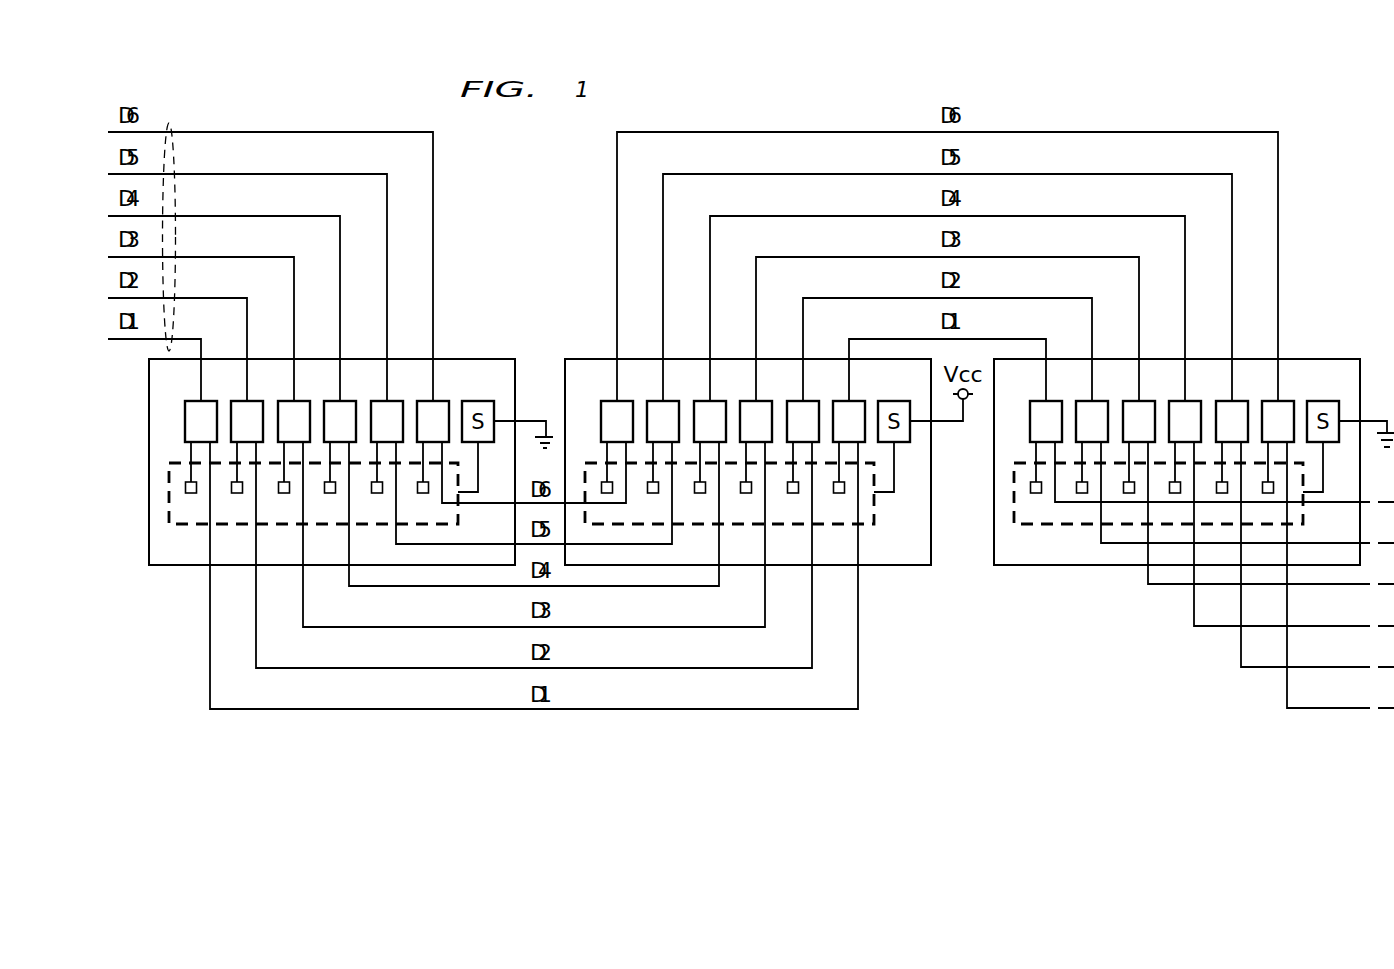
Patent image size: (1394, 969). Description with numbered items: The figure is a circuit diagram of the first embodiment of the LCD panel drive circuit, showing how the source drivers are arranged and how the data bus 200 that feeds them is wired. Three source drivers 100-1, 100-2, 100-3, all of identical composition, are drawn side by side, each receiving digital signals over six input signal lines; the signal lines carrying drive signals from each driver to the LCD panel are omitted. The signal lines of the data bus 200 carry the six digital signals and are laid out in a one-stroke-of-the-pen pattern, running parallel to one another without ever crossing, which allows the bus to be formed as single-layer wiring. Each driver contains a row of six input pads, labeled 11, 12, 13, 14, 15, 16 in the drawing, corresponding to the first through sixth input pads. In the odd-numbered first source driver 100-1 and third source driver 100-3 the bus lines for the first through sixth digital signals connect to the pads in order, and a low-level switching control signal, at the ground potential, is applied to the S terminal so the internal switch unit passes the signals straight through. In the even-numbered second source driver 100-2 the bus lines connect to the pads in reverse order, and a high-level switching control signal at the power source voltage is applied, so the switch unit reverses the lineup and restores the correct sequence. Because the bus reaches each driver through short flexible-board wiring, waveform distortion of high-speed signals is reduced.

The data bus 200 is at (170, 123).
The first source driver 100-1 is at (187, 565).
The second source driver 100-2 is at (898, 565).
The third source driver 100-3 is at (1313, 357).
The drive circuit 11 is at (623, 447).
The drive circuit 12 is at (669, 447).
The drive circuit 13 is at (716, 447).
The drive circuit 14 is at (762, 447).
The drive circuit 15 is at (809, 447).
The drive circuit 16 is at (855, 447).